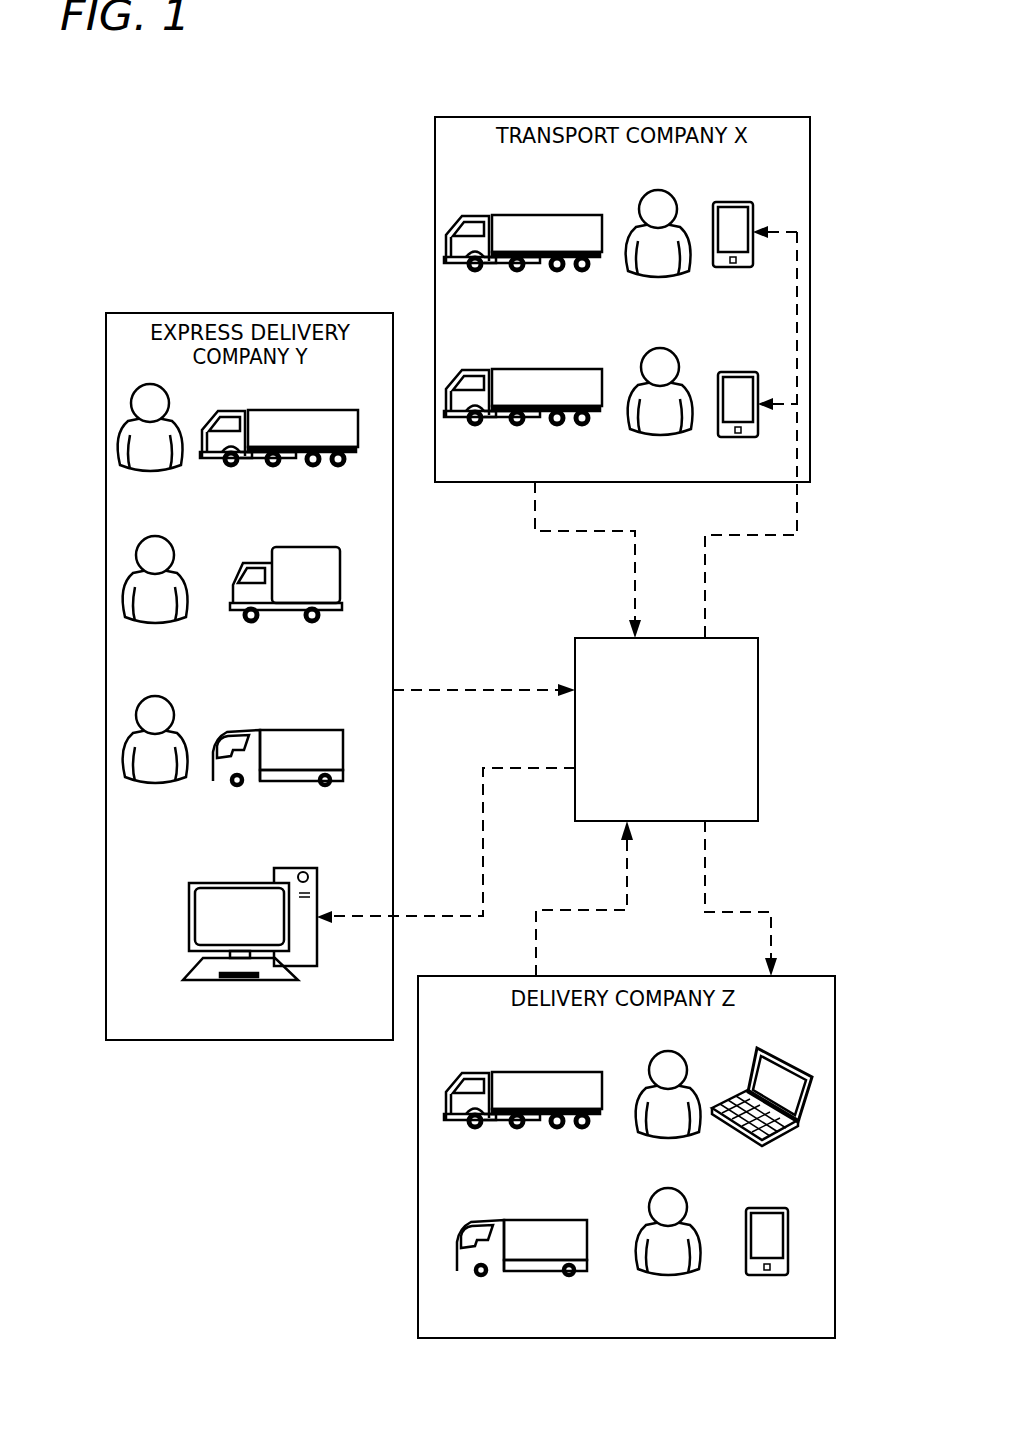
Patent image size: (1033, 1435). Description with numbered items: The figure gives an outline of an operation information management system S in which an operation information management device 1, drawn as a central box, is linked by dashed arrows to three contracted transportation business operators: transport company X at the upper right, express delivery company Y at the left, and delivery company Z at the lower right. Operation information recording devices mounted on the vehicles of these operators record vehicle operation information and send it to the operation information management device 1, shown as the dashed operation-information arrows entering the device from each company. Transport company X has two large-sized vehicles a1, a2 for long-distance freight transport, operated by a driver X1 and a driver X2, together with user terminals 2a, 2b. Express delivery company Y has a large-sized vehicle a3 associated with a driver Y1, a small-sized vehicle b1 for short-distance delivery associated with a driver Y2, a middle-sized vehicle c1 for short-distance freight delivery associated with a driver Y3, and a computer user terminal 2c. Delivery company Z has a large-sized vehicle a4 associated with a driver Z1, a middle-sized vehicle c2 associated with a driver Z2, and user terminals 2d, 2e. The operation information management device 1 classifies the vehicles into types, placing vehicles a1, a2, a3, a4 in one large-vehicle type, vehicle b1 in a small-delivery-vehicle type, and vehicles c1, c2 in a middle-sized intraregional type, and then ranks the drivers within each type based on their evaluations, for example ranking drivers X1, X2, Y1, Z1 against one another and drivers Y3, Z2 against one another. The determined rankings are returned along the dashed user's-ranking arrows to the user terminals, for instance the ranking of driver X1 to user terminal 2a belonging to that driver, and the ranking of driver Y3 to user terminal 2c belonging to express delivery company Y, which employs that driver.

The operation information management system S is at (386, 172).
The operation information management device 1 is at (732, 637).
The vehicle a1 is at (575, 213).
The vehicle a2 is at (575, 367).
The vehicle a3 is at (330, 410).
The vehicle a4 is at (573, 1072).
The vehicle b1 is at (316, 547).
The vehicle c1 is at (318, 731).
The vehicle c2 is at (562, 1221).
The user terminal 2a is at (729, 201).
The user terminal 2b is at (737, 371).
The user terminal 2c is at (293, 868).
The user terminal 2d is at (787, 1063).
The user terminal 2e is at (762, 1207).
The driver X1 is at (658, 253).
The driver X2 is at (660, 409).
The driver Y1 is at (150, 444).
The driver Y2 is at (155, 597).
The driver Y3 is at (155, 758).
The driver Z1 is at (668, 1111).
The driver Z2 is at (668, 1251).